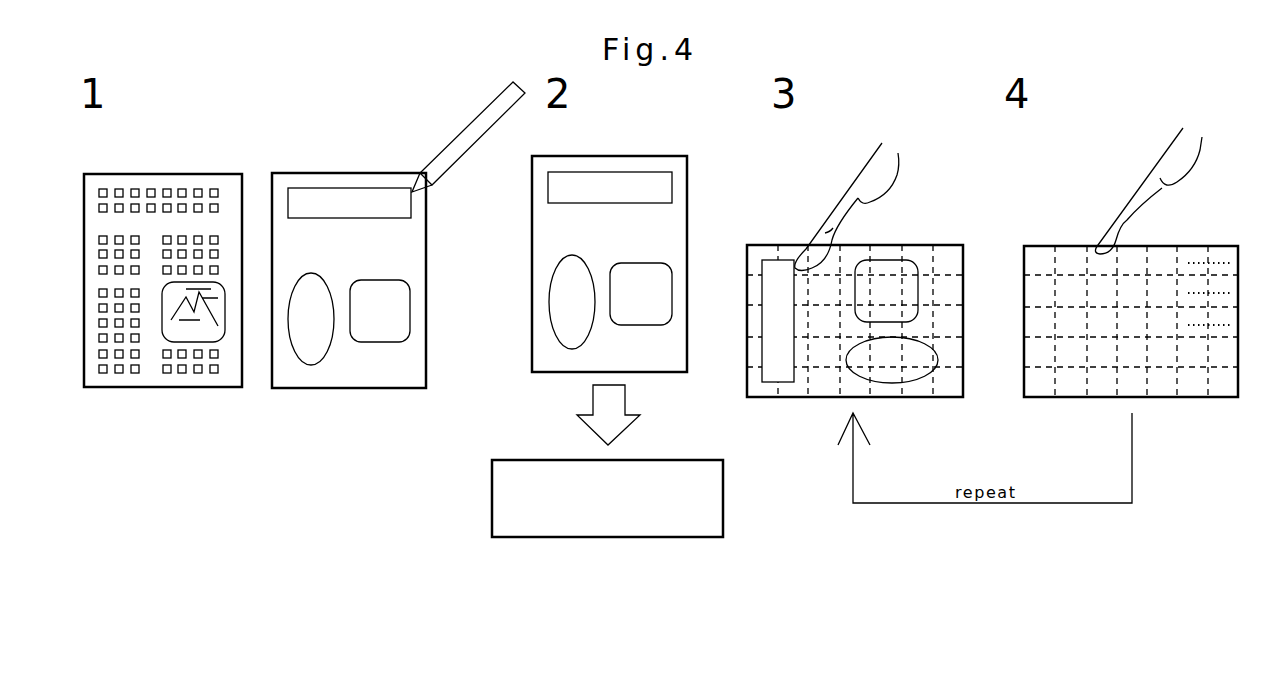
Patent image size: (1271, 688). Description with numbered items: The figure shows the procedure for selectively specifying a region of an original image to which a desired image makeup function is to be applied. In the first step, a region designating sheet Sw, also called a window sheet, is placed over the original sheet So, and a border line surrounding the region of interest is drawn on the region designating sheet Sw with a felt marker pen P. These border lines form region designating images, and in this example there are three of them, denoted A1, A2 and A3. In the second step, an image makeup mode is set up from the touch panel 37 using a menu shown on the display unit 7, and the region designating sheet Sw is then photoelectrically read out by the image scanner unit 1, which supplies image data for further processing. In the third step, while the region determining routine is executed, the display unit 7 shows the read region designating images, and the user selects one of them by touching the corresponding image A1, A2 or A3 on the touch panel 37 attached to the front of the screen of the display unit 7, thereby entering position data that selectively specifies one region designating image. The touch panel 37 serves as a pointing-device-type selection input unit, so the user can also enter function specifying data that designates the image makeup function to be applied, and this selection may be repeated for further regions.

The original sheet So is at (162, 174).
The region designating sheet Sw is at (479, 252).
The felt marker pen P is at (471, 142).
The region designating image A1 is at (316, 220).
The region designating image A2 is at (324, 354).
The region designating image A3 is at (388, 280).
The image scanner unit 1 is at (725, 503).
The touch panel 37 is at (759, 245).
The display unit 7 is at (910, 245).